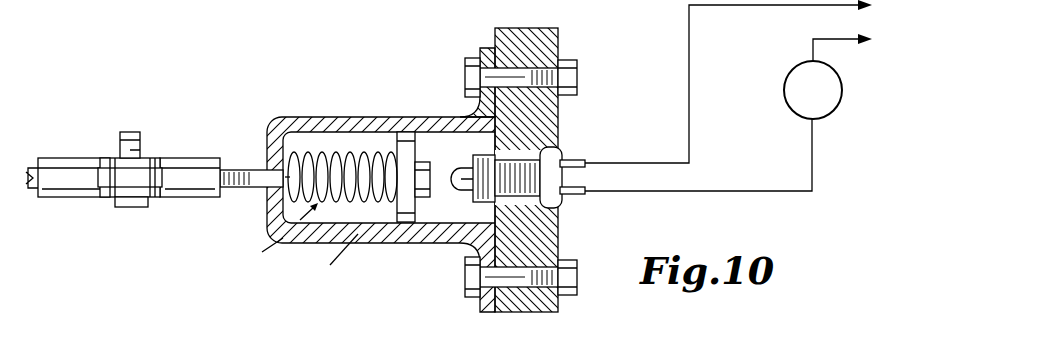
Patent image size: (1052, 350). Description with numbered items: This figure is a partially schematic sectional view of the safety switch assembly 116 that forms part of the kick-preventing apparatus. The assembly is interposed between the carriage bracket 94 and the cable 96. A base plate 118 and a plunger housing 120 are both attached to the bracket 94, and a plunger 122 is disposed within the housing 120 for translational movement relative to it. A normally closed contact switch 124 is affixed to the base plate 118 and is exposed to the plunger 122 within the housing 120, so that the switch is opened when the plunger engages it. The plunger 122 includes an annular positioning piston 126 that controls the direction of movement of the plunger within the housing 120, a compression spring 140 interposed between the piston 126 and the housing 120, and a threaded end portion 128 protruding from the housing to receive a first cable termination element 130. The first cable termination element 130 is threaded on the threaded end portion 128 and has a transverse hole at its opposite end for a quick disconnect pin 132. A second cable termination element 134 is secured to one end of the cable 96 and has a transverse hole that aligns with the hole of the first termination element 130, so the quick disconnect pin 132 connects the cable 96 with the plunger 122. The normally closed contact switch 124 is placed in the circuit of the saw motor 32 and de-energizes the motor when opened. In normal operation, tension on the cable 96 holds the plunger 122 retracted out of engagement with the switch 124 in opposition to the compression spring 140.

The saw motor 32 is at (784, 78).
The carriage bracket 94 is at (560, 46).
The cable 96 is at (36, 168).
The safety switch assembly 116 is at (308, 112).
The base plate 118 is at (487, 46).
The plunger housing 120 is at (329, 268).
The plunger 122 is at (264, 241).
The normally closed contact switch 124 is at (457, 160).
The annular positioning piston 126 is at (403, 240).
The threaded end portion 128 is at (236, 168).
The first cable termination element 130 is at (195, 192).
The quick disconnect pin 132 is at (129, 131).
The second cable termination element 134 is at (80, 196).
The compression spring 140 is at (357, 156).